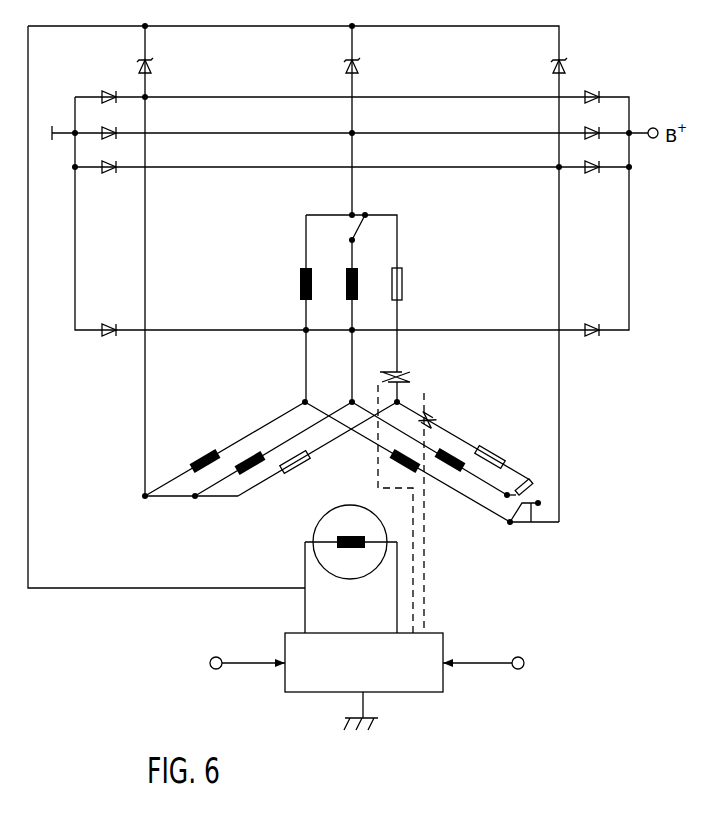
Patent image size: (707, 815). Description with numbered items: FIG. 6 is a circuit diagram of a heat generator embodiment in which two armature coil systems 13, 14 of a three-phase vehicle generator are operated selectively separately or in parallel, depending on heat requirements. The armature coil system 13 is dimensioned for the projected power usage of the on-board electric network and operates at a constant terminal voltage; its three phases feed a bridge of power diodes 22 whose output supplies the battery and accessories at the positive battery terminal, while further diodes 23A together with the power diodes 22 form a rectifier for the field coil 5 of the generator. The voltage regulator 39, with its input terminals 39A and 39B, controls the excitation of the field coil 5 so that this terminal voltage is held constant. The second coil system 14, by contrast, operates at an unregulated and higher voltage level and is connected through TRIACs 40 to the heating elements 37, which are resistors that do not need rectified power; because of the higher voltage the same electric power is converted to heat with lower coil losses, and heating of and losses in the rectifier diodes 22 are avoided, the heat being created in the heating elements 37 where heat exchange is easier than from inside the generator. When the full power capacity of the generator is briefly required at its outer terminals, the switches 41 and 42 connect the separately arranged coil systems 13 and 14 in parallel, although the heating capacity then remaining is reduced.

The field coil 5 is at (360, 572).
The armature coil system 13 is at (300, 277).
The second coil system 14 is at (358, 275).
The power diodes 22 is at (104, 94).
The diodes 23A is at (148, 60).
The heating elements 37 is at (403, 272).
The voltage regulator 39 is at (410, 692).
The voltage regulator input terminal 39A is at (224, 665).
The voltage regulator input terminal 39B is at (506, 665).
The TRIACs 40 is at (422, 410).
The switch 41 is at (531, 514).
The switch 42 is at (530, 481).